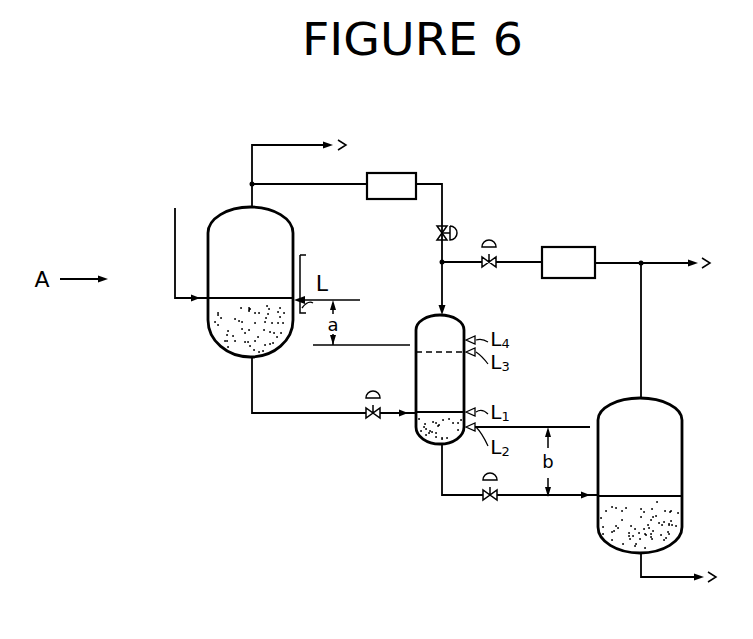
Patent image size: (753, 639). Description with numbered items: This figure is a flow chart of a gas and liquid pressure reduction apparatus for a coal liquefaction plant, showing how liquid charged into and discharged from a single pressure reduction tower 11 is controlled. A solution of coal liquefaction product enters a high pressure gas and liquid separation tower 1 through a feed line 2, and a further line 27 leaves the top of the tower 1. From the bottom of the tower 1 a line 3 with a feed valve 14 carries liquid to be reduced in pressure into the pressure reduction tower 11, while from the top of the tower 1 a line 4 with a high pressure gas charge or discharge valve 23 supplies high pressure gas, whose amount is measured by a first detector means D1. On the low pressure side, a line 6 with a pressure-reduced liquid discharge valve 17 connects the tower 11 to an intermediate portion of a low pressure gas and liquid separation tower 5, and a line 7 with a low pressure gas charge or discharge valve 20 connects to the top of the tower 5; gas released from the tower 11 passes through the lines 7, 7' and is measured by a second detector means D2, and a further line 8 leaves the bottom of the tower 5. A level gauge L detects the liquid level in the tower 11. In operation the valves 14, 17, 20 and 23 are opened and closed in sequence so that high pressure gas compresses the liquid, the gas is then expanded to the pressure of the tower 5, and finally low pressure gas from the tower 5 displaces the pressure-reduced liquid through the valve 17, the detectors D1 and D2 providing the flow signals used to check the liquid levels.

The high pressure gas and liquid separation tower 1 is at (229, 208).
The feed line 2 is at (175, 236).
The line 3 is at (300, 416).
The line 4 is at (322, 185).
The low pressure gas and liquid separation tower 5 is at (683, 424).
The line 6 is at (543, 498).
The line 7 is at (618, 235).
The line 7' is at (675, 237).
The bottom outlet line from vessel 5 8 is at (670, 578).
The gas and liquid pressure reduction tower 11 is at (418, 330).
The feed valve 14 is at (373, 420).
The pressure-reduced liquid discharge valve 17 is at (487, 500).
The low pressure gas charge or discharge valve 20 is at (493, 258).
The high pressure gas charge or discharge valve 23 is at (445, 226).
The overhead vent line 27 is at (292, 144).
The first detector means D1 is at (392, 173).
The second detector means D2 is at (573, 247).